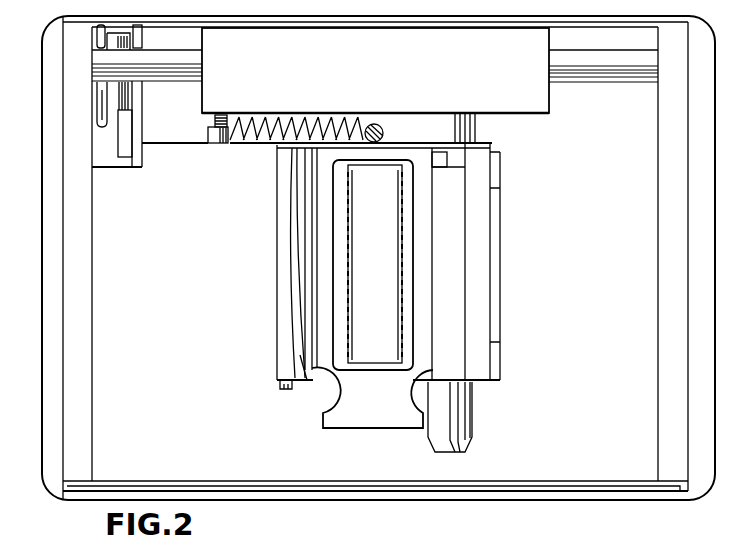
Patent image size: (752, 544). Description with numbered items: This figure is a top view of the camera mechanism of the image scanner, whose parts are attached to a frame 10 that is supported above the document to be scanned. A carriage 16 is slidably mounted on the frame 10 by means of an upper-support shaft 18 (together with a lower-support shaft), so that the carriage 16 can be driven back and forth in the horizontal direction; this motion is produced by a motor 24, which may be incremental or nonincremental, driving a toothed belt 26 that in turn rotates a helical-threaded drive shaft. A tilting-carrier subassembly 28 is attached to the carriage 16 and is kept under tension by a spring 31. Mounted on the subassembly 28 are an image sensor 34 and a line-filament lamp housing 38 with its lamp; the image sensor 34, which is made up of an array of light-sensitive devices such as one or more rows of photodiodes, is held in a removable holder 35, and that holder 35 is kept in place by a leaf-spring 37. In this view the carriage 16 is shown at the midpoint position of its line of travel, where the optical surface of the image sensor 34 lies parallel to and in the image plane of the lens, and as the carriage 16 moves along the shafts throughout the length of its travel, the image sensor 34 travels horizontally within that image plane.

The frame 10 is at (705, 478).
The carriage 16 is at (533, 107).
The upper-support shaft 18 is at (162, 78).
The motor 24 is at (156, 136).
The toothed belt 26 is at (113, 112).
The tilting-carrier subassembly 28 is at (277, 318).
The spring 31 is at (263, 142).
The image sensor 34 is at (378, 299).
The removable holder 35 is at (323, 422).
The leaf-spring 37 is at (307, 272).
The line-filament lamp housing 38 is at (472, 426).